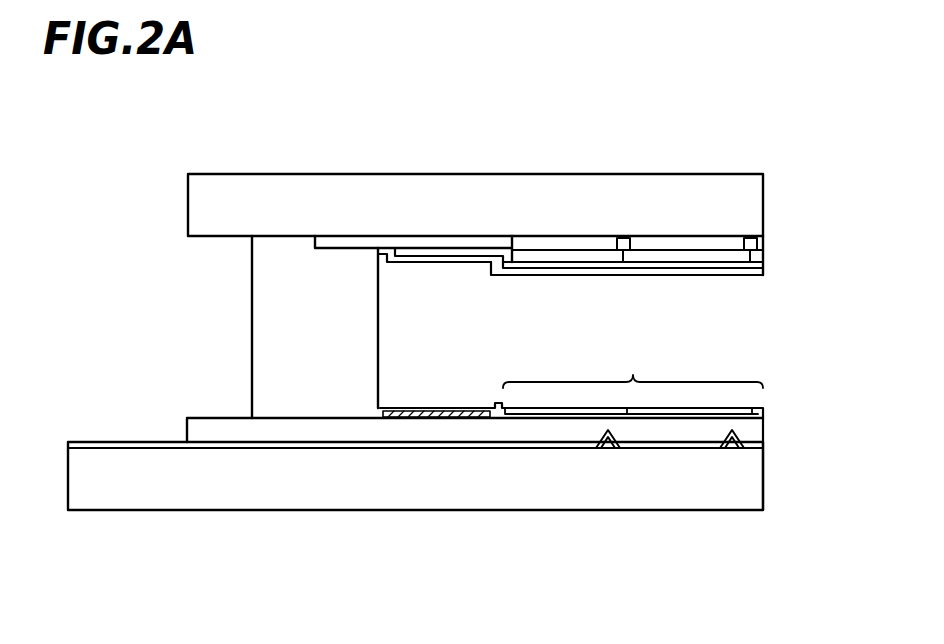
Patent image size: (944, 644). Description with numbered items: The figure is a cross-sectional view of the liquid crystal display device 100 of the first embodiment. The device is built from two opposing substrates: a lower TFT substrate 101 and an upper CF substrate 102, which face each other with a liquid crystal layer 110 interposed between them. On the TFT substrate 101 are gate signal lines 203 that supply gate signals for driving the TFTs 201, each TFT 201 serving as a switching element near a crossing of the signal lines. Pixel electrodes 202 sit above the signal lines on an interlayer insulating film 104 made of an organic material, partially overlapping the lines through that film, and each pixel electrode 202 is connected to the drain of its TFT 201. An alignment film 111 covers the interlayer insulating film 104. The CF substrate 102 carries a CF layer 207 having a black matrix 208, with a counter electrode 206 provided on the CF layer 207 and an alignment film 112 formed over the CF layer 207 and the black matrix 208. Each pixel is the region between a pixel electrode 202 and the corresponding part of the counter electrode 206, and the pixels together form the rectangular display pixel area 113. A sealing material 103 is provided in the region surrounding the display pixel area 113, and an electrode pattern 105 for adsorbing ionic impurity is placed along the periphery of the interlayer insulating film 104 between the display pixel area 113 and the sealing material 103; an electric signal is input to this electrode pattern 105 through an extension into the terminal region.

The liquid crystal display device 100 is at (773, 91).
The TFT substrate 101 is at (505, 483).
The CF substrate 102 is at (558, 200).
The sealing material 103 is at (277, 318).
The interlayer insulating film 104 is at (230, 427).
The electrode pattern 105 is at (437, 418).
The liquid crystal layer 110 is at (713, 332).
The alignment film 111 is at (762, 410).
The alignment film 112 is at (742, 280).
The display pixel area 113 is at (633, 363).
The TFT 201 is at (727, 452).
The pixel electrode 202 is at (697, 417).
The gate signal line 203 is at (138, 445).
The counter electrode 206 is at (762, 267).
The CF layer 207 is at (690, 250).
The black matrix 208 is at (413, 243).